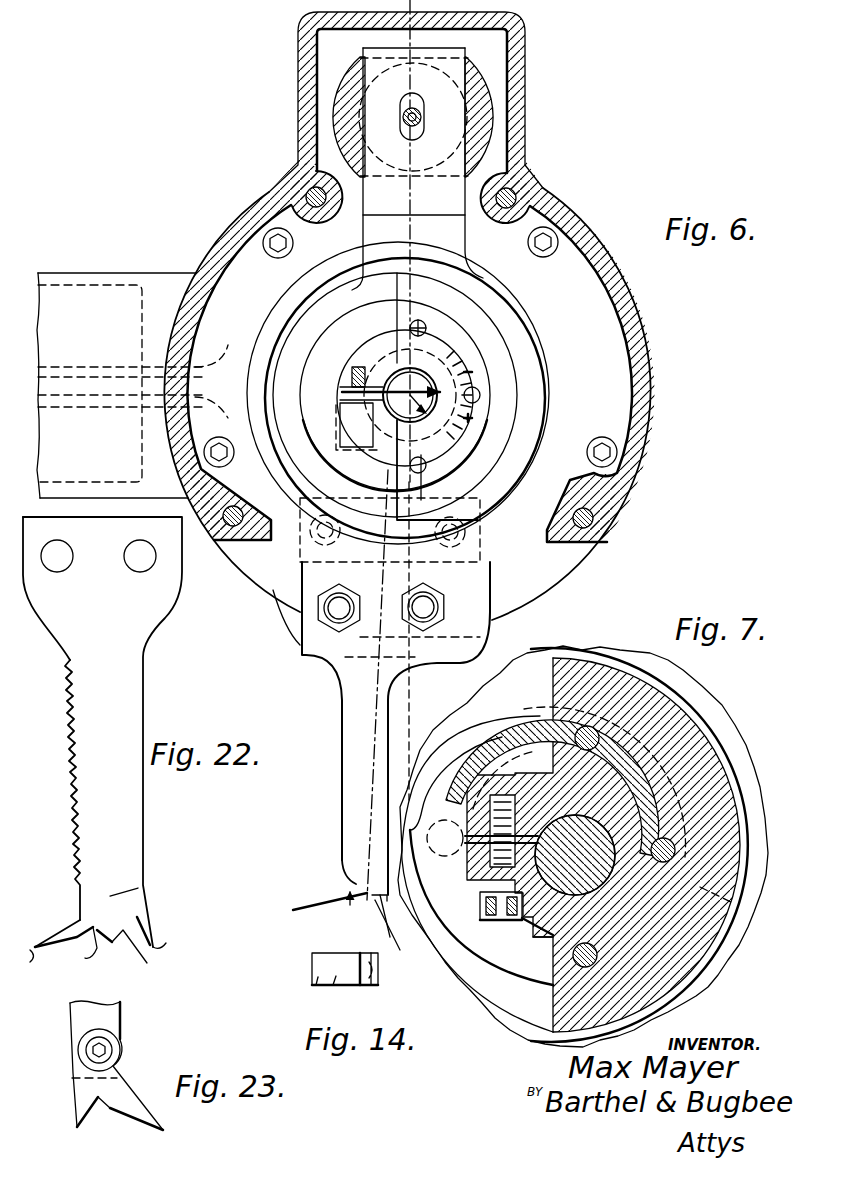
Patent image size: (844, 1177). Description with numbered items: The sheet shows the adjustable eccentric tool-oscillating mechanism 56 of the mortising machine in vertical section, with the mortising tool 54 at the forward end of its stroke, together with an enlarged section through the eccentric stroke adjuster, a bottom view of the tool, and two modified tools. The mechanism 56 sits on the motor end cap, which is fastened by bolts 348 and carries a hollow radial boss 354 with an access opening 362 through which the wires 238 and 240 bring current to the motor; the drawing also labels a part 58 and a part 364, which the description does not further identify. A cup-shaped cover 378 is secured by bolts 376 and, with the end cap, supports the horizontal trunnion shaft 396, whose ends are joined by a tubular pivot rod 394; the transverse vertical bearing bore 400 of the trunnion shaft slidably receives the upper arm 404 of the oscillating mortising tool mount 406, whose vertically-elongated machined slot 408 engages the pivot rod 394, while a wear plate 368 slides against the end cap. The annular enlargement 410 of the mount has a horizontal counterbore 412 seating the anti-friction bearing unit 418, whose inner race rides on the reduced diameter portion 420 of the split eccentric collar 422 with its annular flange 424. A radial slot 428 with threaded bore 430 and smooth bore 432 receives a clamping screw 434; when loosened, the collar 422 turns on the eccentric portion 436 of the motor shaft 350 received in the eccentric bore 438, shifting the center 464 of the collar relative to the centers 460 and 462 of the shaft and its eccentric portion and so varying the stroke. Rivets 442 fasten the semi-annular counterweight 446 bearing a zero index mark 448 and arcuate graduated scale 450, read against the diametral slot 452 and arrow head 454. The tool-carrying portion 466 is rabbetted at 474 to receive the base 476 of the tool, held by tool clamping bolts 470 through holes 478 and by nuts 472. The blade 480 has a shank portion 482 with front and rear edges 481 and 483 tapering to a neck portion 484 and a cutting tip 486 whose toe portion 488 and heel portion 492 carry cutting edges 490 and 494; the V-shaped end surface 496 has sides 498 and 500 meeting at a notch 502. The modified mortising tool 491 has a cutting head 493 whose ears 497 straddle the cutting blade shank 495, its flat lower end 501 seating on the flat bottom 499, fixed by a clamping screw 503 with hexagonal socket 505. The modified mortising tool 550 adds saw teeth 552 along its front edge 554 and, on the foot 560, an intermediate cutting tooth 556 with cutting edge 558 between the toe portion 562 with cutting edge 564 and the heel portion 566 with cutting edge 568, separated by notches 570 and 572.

In FIG. 6, the mortising tool 54 is at (341, 750).
In FIG. 6, the adjustable eccentric tool-oscillating mechanism 56 is at (548, 367).
In FIG. 7, the adjustable eccentric tool-oscillating mechanism 56 is at (684, 670).
In FIG. 6, the rim 58 is at (655, 427).
In FIG. 6, the wire 238 is at (80, 367).
In FIG. 6, the wire 240 is at (80, 412).
In FIG. 6, the bolts 348 is at (291, 258).
In FIG. 6, the motor shaft 350 is at (421, 320).
In FIG. 7, the motor shaft 350 is at (732, 905).
In FIG. 6, the hollow radial boss 354 is at (158, 272).
In FIG. 6, the access opening 362 is at (80, 287).
In FIG. 6, the plate 364 is at (486, 553).
In FIG. 6, the wear plate 368 is at (494, 511).
In FIG. 6, the bolts 376 is at (303, 192).
In FIG. 6, the cup-shaped cover 378 is at (300, 47).
In FIG. 6, the tubular pivot rod 394 is at (421, 107).
In FIG. 6, the horizontal trunnion shaft 396 is at (470, 88).
In FIG. 6, the transverse vertical bearing bore 400 is at (472, 109).
In FIG. 6, the upper arm 404 is at (462, 236).
In FIG. 6, the oscillating mortising tool mount 406 is at (492, 290).
In FIG. 6, the vertically-elongated machined slot 408 is at (405, 104).
In FIG. 6, the annular enlargement 410 is at (522, 328).
In FIG. 7, the annular enlargement 410 is at (698, 700).
In FIG. 6, the horizontal counterbore 412 is at (262, 342).
In FIG. 7, the anti-friction bearing unit 418 is at (481, 748).
In FIG. 6, the reduced diameter portion 420 is at (352, 338).
In FIG. 6, the split eccentric collar 422 is at (391, 342).
In FIG. 7, the split eccentric collar 422 is at (495, 970).
In FIG. 6, the annular flange 424 is at (336, 358).
In FIG. 6, the radial slot 428 is at (341, 389).
In FIG. 7, the radial slot 428 is at (466, 870).
In FIG. 6, the threaded bore 430 is at (353, 371).
In FIG. 7, the threaded bore 430 is at (471, 831).
In FIG. 6, the smooth bore 432 is at (345, 433).
In FIG. 7, the smooth bore 432 is at (480, 904).
In FIG. 6, the clamping screw 434 is at (340, 449).
In FIG. 7, the clamping screw 434 is at (496, 922).
In FIG. 6, the eccentric portion 436 is at (436, 466).
In FIG. 7, the eccentric portion 436 is at (640, 800).
In FIG. 7, the eccentric bore 438 is at (518, 932).
In FIG. 6, the rivets 442 is at (425, 481).
In FIG. 7, the rivets 442 is at (668, 852).
In FIG. 6, the semi-annular counterweight 446 is at (498, 446).
In FIG. 7, the semi-annular counterweight 446 is at (700, 737).
In FIG. 6, the zero index mark 448 is at (479, 398).
In FIG. 6, the arcuate graduated scale 450 is at (448, 356).
In FIG. 6, the diametral slot 452 is at (391, 407).
In FIG. 6, the arrow head 454 is at (425, 331).
In FIG. 7, the center of motor shaft 460 is at (543, 730).
In FIG. 7, the center of eccentric portion 462 is at (690, 930).
In FIG. 7, the center of eccentric collar 464 is at (512, 738).
In FIG. 6, the tool-carrying portion 466 is at (298, 650).
In FIG. 6, the tool clamping bolts 470 is at (328, 605).
In FIG. 6, the tool clamping nuts 472 is at (318, 618).
In FIG. 6, the rabbetted portion 474 is at (276, 588).
In FIG. 6, the base 476 is at (455, 582).
In FIG. 22, the base 476 is at (150, 606).
In FIG. 22, the holes 478 is at (124, 556).
In FIG. 6, the blade 480 is at (347, 698).
In FIG. 23, the blade 480 is at (125, 1110).
In FIG. 6, the front edge 481 is at (343, 823).
In FIG. 6, the shank portion 482 is at (343, 806).
In FIG. 6, the rear edge 483 is at (404, 720).
In FIG. 6, the neck portion 484 is at (343, 872).
In FIG. 6, the cutting tip 486 is at (366, 898).
In FIG. 6, the toe portion 488 is at (340, 888).
In FIG. 6, the cutting edge 490 is at (335, 903).
In FIG. 14, the cutting edge 490 is at (312, 968).
In FIG. 23, the cutting edge 490 is at (168, 1130).
In FIG. 23, the modified mortising tool 491 is at (68, 1011).
In FIG. 6, the heel portion 492 is at (384, 899).
In FIG. 23, the heel portion 492 is at (77, 1106).
In FIG. 23, the cutting head 493 is at (70, 1060).
In FIG. 6, the cutting edge 494 is at (391, 922).
In FIG. 14, the cutting edge 494 is at (380, 980).
In FIG. 23, the cutting edge 494 is at (74, 1128).
In FIG. 23, the cutting blade shank 495 is at (126, 1005).
In FIG. 6, the end surface 496 is at (330, 898).
In FIG. 14, the end surface 496 is at (318, 988).
In FIG. 23, the end surface 496 is at (146, 1128).
In FIG. 23, the ears 497 is at (114, 1043).
In FIG. 6, the side 498 is at (338, 903).
In FIG. 14, the side 498 is at (333, 988).
In FIG. 23, the side 498 is at (128, 1121).
In FIG. 23, the flat bottom 499 is at (72, 1078).
In FIG. 6, the side 500 is at (390, 940).
In FIG. 14, the side 500 is at (374, 988).
In FIG. 23, the side 500 is at (93, 1121).
In FIG. 23, the flat lower end 501 is at (119, 1068).
In FIG. 6, the notch 502 is at (368, 893).
In FIG. 14, the notch 502 is at (360, 987).
In FIG. 23, the notch 502 is at (97, 1097).
In FIG. 23, the clamping screw 503 is at (106, 1048).
In FIG. 23, the hexagonal socket 505 is at (74, 1041).
In FIG. 22, the modified mortising tool 550 is at (149, 700).
In FIG. 22, the saw teeth 552 is at (72, 795).
In FIG. 22, the front edge 554 is at (74, 748).
In FIG. 22, the cutting tooth 556 is at (111, 946).
In FIG. 22, the cutting edge 558 is at (86, 951).
In FIG. 22, the foot 560 is at (141, 890).
In FIG. 22, the toe portion 562 is at (53, 932).
In FIG. 22, the cutting edge 564 is at (34, 950).
In FIG. 22, the heel portion 566 is at (151, 926).
In FIG. 22, the cutting edge 568 is at (162, 946).
In FIG. 22, the notch 570 is at (93, 927).
In FIG. 22, the notch 572 is at (148, 951).